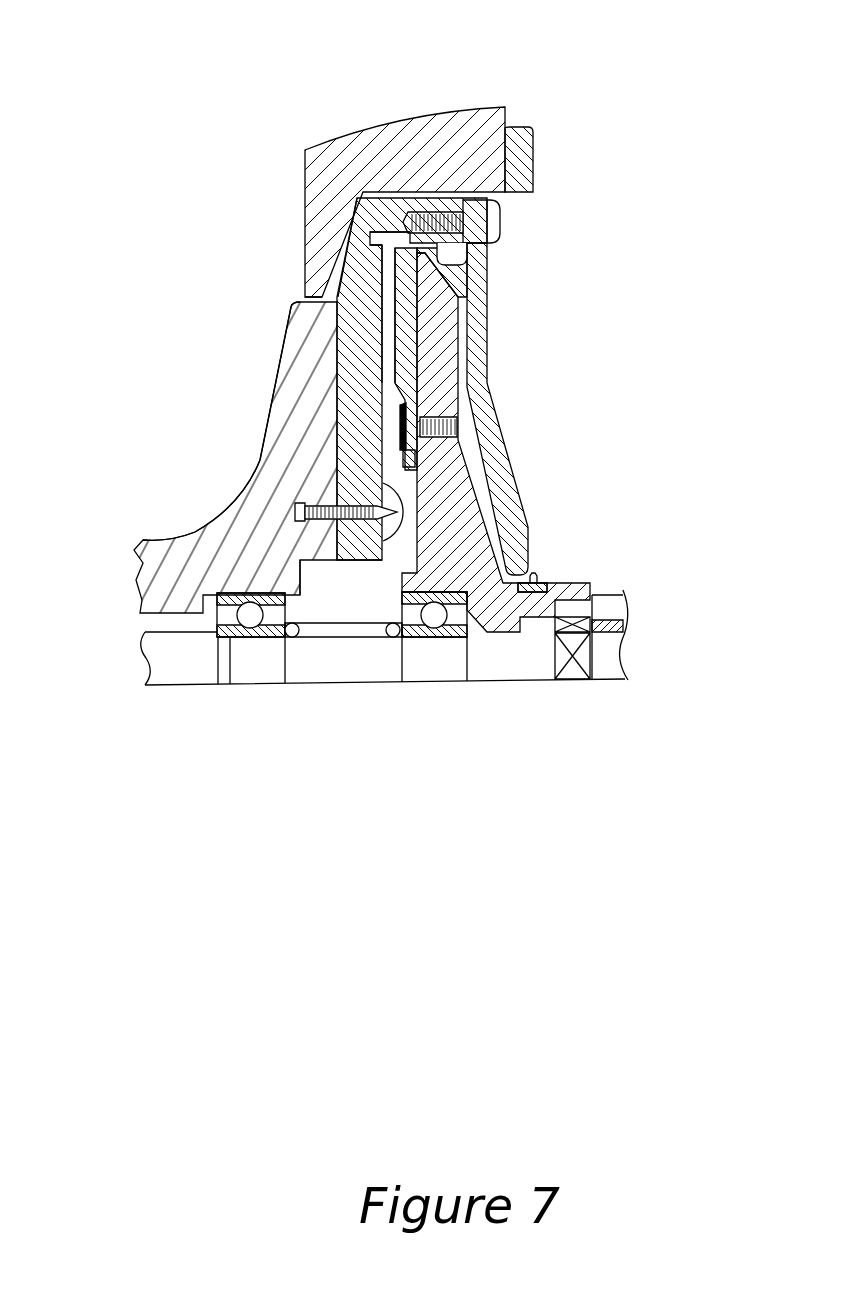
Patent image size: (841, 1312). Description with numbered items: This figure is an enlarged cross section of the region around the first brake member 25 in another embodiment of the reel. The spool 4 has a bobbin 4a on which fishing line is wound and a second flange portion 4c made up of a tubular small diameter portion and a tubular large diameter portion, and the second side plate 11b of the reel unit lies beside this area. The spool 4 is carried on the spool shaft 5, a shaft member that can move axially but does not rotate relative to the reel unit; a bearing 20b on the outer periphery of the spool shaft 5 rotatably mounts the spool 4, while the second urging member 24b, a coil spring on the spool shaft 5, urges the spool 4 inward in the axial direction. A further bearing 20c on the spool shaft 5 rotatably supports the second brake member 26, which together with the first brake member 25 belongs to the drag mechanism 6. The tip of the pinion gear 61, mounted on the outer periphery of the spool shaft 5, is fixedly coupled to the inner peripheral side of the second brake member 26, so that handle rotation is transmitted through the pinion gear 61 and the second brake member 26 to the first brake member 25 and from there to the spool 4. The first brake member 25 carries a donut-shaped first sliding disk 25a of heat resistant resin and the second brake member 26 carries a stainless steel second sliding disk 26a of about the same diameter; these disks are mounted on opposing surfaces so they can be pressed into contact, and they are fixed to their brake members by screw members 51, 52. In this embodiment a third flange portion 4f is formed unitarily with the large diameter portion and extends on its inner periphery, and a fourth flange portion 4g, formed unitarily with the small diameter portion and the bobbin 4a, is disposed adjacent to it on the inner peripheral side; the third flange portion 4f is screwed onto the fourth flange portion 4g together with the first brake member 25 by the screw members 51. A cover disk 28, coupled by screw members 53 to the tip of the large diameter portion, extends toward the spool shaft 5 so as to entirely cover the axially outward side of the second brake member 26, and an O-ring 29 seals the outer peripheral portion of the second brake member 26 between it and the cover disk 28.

The spool 4 is at (150, 442).
The bobbin 4a is at (157, 550).
The second flange portion 4c is at (260, 443).
The third flange portion 4f is at (360, 550).
The fourth flange portion 4g is at (327, 545).
The spool shaft 5 is at (607, 658).
The drag mechanism 6 is at (530, 258).
The second side plate 11b is at (437, 108).
The bearing 20b is at (250, 620).
The bearing 20c is at (435, 620).
The second urging member 24b is at (352, 636).
The first brake member 25 is at (380, 275).
The first sliding disk 25a is at (378, 367).
The second brake member 26 is at (405, 373).
The second sliding disk 26a is at (397, 348).
The cover disk 28 is at (512, 478).
The O-ring 29 is at (533, 575).
The screw members 51 is at (403, 512).
The screw members 52 is at (400, 430).
The screw members 53 is at (502, 222).
The pinion gear 61 is at (616, 603).